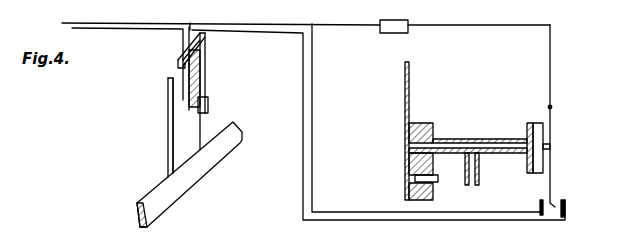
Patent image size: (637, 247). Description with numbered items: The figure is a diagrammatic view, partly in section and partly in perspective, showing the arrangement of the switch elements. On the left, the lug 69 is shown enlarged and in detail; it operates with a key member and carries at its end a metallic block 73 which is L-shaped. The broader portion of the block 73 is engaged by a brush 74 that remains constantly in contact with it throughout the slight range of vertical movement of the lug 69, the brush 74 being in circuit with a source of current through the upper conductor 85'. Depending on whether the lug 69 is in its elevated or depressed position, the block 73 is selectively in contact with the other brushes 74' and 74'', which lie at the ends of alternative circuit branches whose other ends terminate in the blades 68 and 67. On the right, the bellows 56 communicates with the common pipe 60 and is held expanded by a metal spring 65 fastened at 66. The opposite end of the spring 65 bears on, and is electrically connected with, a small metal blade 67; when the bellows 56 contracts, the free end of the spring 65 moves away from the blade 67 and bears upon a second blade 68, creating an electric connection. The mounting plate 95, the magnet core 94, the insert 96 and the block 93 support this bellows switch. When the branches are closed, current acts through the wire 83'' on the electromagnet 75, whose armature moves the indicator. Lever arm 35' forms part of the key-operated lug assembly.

The conductor 85' is at (127, 44).
The brush 74 is at (172, 70).
The brush 74' is at (214, 51).
The brush 74'' is at (223, 99).
The metallic block 73 is at (173, 98).
The lug 69 is at (178, 133).
The lever arm 35' is at (189, 174).
The electromagnet 75 is at (397, 17).
The wire 83'' is at (568, 66).
The fastening point 66 is at (552, 108).
The metal spring 65 is at (552, 198).
The second blade 68 is at (541, 210).
The metal blade 67 is at (566, 210).
The plate 95 is at (405, 97).
The magnet core 94 is at (425, 143).
The insert 96 is at (437, 182).
The block 93 is at (409, 188).
The common pipe 60 is at (480, 170).
The bellows 56 is at (527, 124).